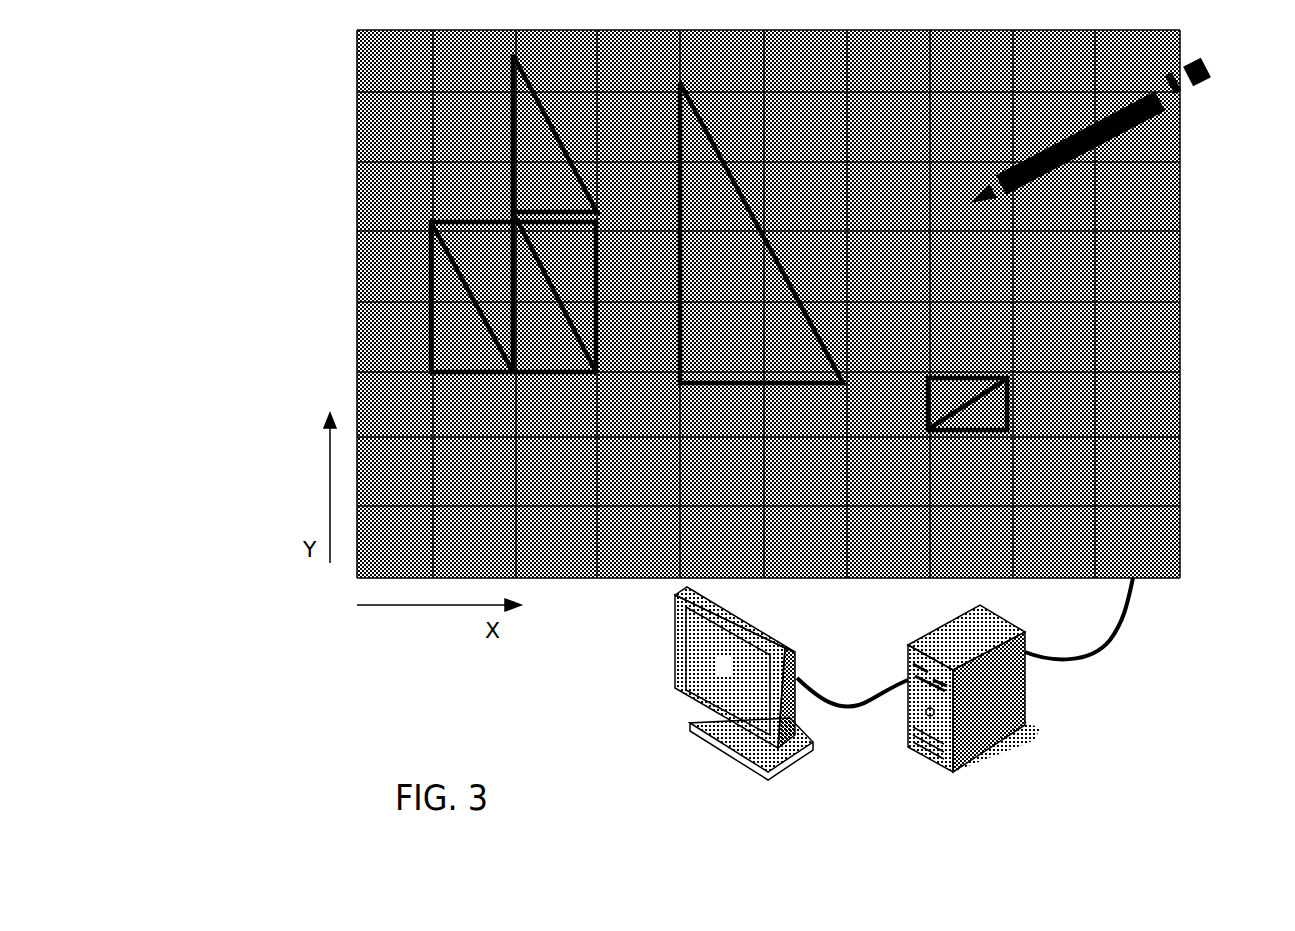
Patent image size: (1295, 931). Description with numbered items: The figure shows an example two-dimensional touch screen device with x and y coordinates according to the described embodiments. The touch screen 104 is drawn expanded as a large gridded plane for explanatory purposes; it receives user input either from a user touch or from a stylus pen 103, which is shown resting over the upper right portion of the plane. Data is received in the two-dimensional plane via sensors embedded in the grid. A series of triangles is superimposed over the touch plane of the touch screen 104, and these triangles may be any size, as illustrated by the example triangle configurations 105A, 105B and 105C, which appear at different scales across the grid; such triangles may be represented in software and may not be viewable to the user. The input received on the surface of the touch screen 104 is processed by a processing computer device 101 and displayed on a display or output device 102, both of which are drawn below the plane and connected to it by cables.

The processing computer device 101 is at (925, 757).
The display or output device 102 is at (757, 758).
The stylus pen 103 is at (1116, 131).
The touch screen 104 is at (373, 97).
The triangle configuration 105A is at (440, 293).
The triangle configuration 105B is at (705, 372).
The triangle configuration 105C is at (968, 418).